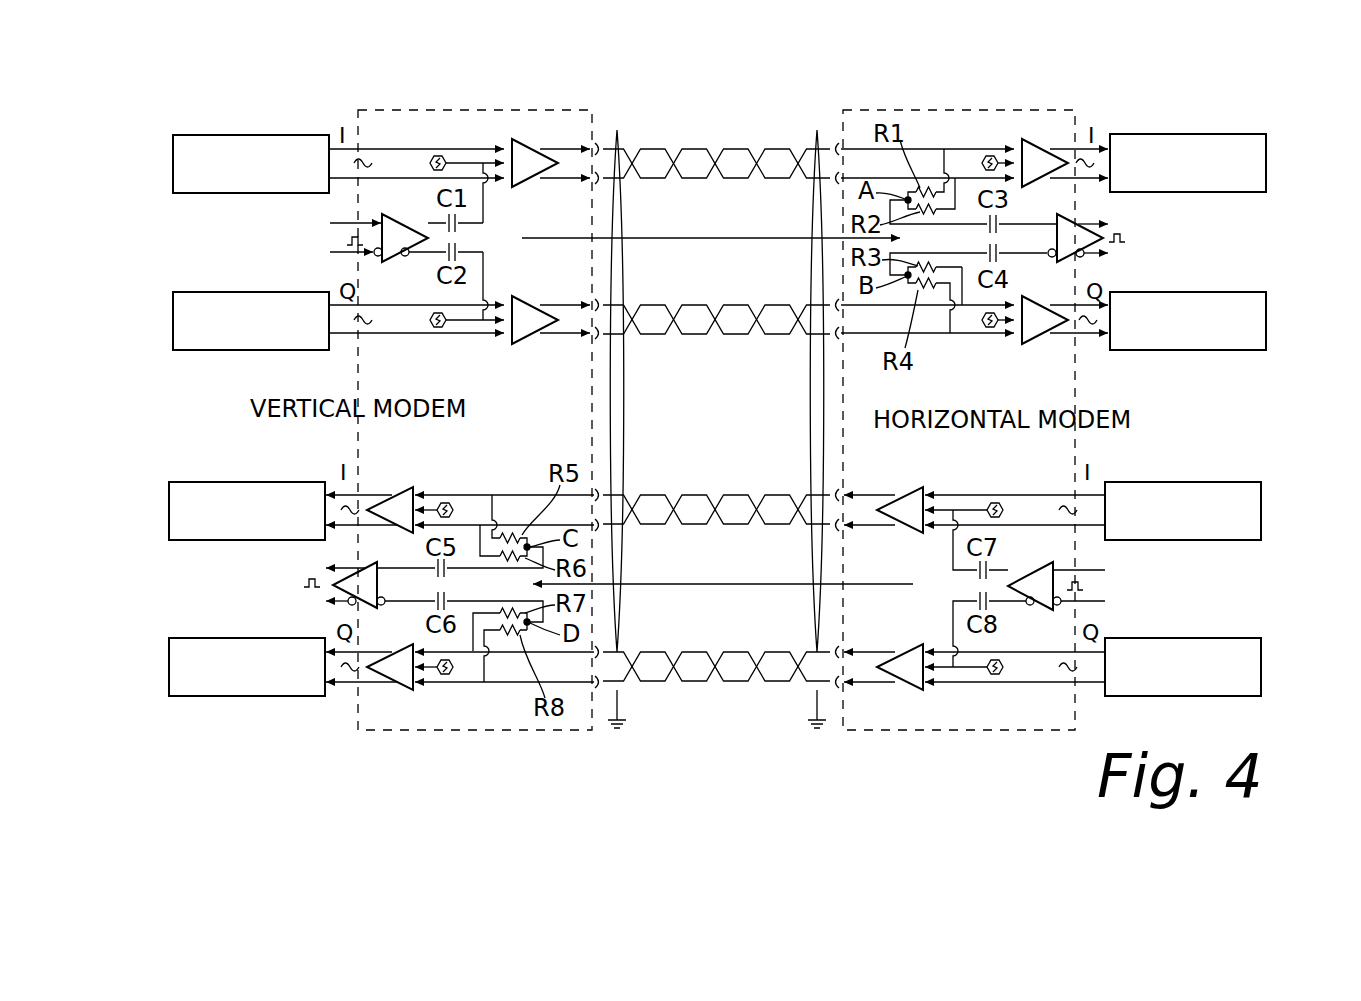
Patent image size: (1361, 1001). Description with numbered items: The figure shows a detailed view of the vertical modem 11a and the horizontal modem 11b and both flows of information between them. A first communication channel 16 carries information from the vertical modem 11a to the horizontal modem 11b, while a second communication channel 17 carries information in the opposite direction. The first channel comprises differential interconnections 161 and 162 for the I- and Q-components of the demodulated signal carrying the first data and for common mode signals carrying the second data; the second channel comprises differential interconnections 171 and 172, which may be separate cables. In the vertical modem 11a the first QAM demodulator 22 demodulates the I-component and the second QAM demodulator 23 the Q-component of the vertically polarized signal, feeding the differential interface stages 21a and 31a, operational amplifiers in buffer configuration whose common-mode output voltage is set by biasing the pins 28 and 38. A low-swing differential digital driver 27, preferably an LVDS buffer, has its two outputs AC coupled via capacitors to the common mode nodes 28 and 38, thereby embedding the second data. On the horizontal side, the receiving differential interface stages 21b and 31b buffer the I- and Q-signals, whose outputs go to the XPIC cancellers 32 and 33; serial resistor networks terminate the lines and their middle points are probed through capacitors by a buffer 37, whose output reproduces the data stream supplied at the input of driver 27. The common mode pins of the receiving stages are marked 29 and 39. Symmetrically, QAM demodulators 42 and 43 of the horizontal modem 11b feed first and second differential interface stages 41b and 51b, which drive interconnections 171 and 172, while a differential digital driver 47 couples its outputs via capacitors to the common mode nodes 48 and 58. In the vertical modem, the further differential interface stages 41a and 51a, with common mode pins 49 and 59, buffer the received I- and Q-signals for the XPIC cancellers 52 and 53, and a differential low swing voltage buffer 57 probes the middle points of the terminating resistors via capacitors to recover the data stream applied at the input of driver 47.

The vertical modem 11a is at (562, 108).
The horizontal modem 11b is at (885, 108).
The first communication channel 16 is at (728, 238).
The second communication channel 17 is at (680, 582).
The differential interconnection 161 is at (695, 143).
The differential interconnection 162 is at (693, 300).
The differential interconnection 171 is at (693, 490).
The differential interconnection 172 is at (700, 695).
The first QAM demodulator 22 is at (200, 150).
The second QAM demodulator 23 is at (200, 308).
The QAM demodulator 42 is at (1235, 500).
The QAM demodulator 43 is at (1235, 660).
The XPIC canceller 32 is at (1235, 152).
The XPIC canceller 33 is at (1235, 312).
The XPIC canceller 52 is at (200, 500).
The XPIC canceller 53 is at (200, 660).
The differential interface stage 21a is at (530, 165).
The differential interface stage 31a is at (535, 331).
The receiving differential interface stage 21b is at (1040, 165).
The receiving differential interface stage 31b is at (1040, 329).
The differential interface stage 41a is at (398, 505).
The differential interface stage 51a is at (400, 688).
The first differential interface stage 41b is at (910, 514).
The second differential interface stage 51b is at (905, 688).
The differential digital driver 27 is at (400, 235).
The buffer 37 is at (1080, 240).
The differential digital driver 47 is at (1045, 585).
The differential low swing voltage buffer 57 is at (360, 585).
The common mode node 28 is at (437, 155).
The common mode node 38 is at (437, 328).
The common mode signal sink 29 is at (990, 155).
The common mode signal sink 39 is at (990, 329).
The common mode node 48 is at (997, 503).
The common mode node 58 is at (996, 676).
The common mode signal sink 49 is at (449, 504).
The common mode signal sink 59 is at (446, 676).